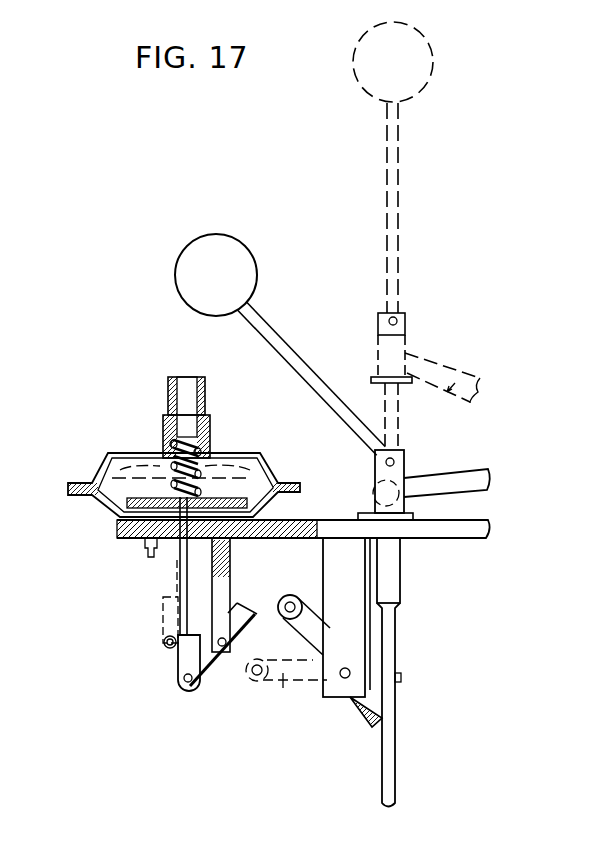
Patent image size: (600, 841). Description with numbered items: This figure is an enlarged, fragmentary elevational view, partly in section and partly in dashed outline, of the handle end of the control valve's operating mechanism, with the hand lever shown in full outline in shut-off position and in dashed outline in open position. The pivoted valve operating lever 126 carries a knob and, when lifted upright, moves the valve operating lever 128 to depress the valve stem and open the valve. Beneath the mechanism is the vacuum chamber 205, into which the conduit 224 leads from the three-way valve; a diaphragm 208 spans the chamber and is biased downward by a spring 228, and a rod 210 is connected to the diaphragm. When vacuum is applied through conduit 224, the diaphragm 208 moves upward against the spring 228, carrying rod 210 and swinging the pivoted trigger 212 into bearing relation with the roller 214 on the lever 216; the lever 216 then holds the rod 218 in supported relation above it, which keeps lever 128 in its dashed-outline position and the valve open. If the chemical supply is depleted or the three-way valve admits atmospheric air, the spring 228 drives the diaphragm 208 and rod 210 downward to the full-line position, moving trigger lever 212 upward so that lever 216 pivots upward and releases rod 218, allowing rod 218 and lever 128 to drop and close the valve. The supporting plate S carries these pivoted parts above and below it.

The valve operating lever 126 is at (385, 293).
The valve operating lever 128 is at (436, 480).
The support plate S is at (447, 536).
The vacuum chamber 205 is at (108, 458).
The diaphragm 208 is at (100, 512).
The rod 210 is at (190, 576).
The pivoted trigger 212 is at (210, 690).
The roller 214 is at (273, 632).
The lever 216 is at (288, 672).
The rod 218 is at (393, 627).
The conduit 224 is at (190, 397).
The spring 228 is at (203, 462).